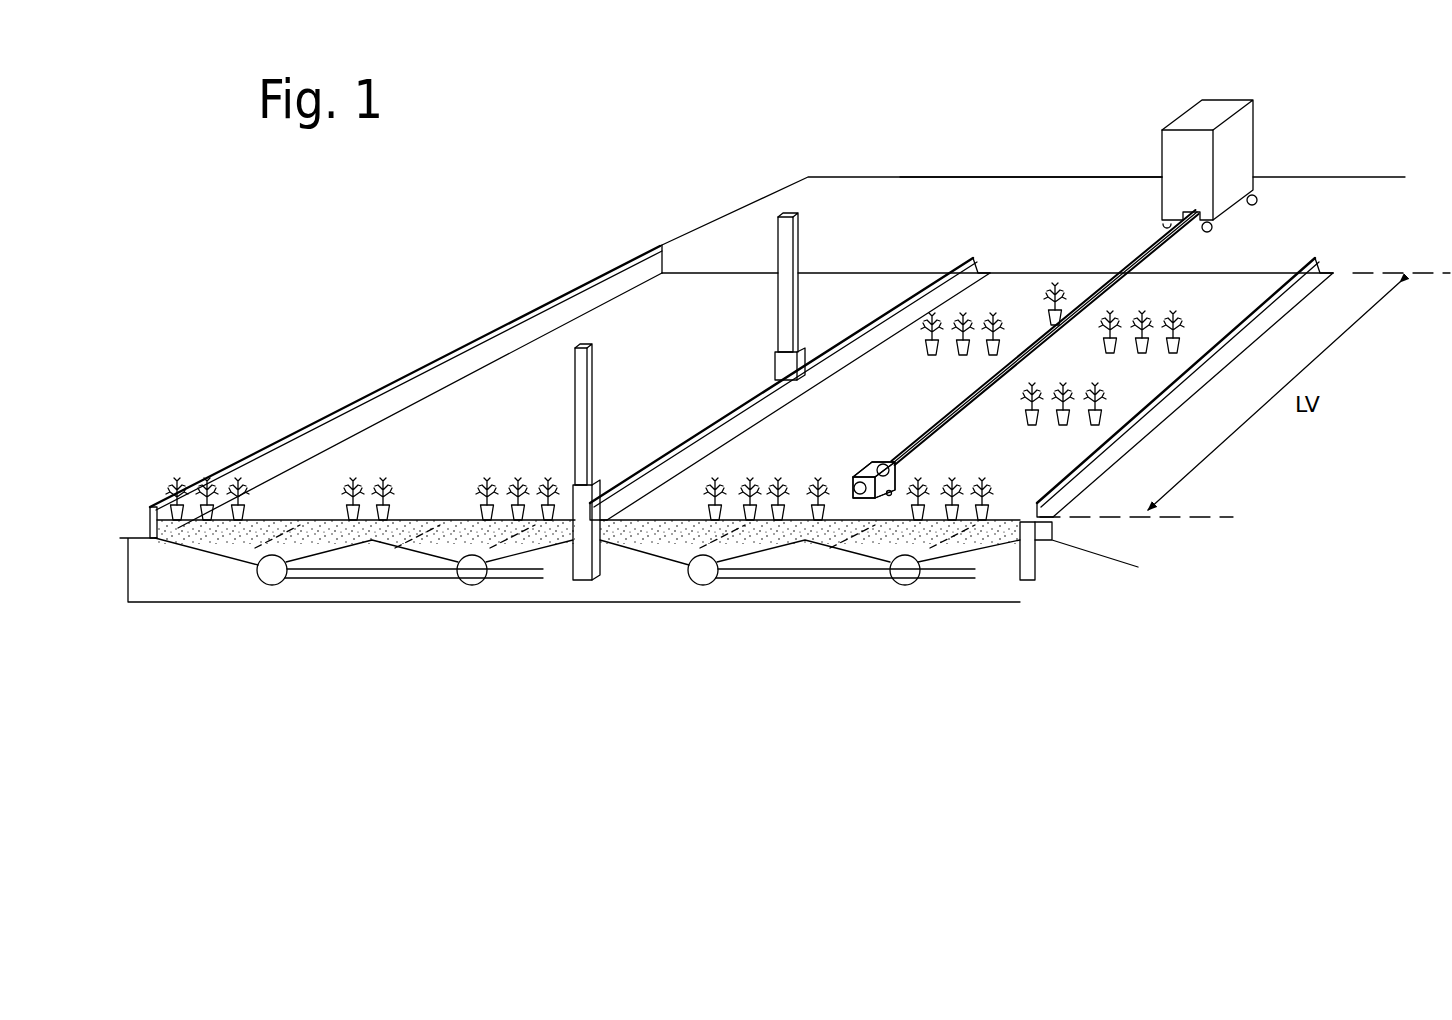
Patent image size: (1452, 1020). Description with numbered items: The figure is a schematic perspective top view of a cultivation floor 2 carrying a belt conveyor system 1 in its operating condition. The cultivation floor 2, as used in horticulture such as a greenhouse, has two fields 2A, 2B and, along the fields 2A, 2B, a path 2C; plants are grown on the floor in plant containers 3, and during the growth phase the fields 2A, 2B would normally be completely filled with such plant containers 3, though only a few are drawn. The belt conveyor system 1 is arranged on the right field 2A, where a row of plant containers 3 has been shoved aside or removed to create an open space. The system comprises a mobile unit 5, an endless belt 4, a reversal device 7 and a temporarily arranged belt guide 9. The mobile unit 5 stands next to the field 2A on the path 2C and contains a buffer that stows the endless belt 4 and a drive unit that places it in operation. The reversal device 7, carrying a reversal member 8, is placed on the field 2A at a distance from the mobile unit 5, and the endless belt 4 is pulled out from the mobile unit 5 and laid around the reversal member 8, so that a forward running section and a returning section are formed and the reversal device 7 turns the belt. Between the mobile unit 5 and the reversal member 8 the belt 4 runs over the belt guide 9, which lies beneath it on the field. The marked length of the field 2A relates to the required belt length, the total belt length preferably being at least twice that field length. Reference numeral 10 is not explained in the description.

The belt conveyor system 1 is at (1133, 157).
The cultivation floor 2 is at (318, 402).
The field 2A is at (678, 490).
The field 2B is at (447, 480).
The path 2C is at (972, 198).
The plant containers 3 is at (490, 512).
The endless belt 4 is at (1106, 296).
The mobile unit 5 is at (1232, 143).
The reversal device 7 is at (880, 462).
The reversal member 8 is at (853, 490).
The belt guide 9 is at (968, 415).
The camera unit 10 is at (867, 453).